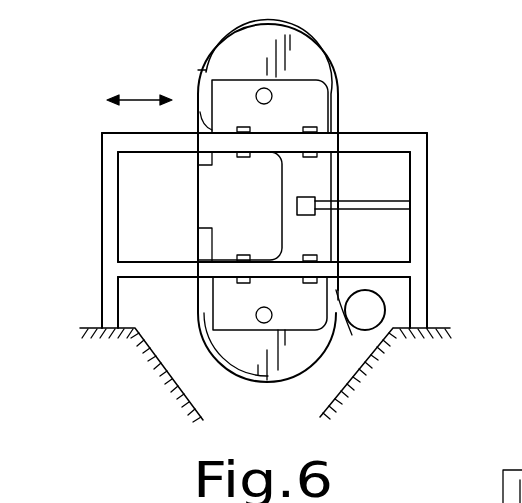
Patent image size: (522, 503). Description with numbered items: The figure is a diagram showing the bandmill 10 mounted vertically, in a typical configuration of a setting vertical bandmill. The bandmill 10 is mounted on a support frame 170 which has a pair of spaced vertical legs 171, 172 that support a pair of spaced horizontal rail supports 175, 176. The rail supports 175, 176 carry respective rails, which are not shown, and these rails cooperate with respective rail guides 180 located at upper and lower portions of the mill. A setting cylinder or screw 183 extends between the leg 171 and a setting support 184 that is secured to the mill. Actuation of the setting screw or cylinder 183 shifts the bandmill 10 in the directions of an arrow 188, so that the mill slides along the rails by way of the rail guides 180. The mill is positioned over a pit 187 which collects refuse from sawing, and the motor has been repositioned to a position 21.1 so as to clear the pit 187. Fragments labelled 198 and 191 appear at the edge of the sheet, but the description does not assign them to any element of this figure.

The bandmill 10 is at (362, 90).
The support frame 170 is at (89, 218).
The vertical leg 171 is at (427, 180).
The vertical leg 172 is at (110, 200).
The horizontal rail support 175 is at (408, 132).
The horizontal rail support 176 is at (152, 272).
The rail guides 180 is at (243, 128).
The setting cylinder or screw 183 is at (392, 210).
The setting support 184 is at (297, 202).
The pit 187 is at (195, 367).
The arrow 188 is at (143, 97).
The motor position 21.1 is at (387, 303).
The adjacent figure element 198 is at (520, 468).
The adjacent figure element 191 is at (468, 491).